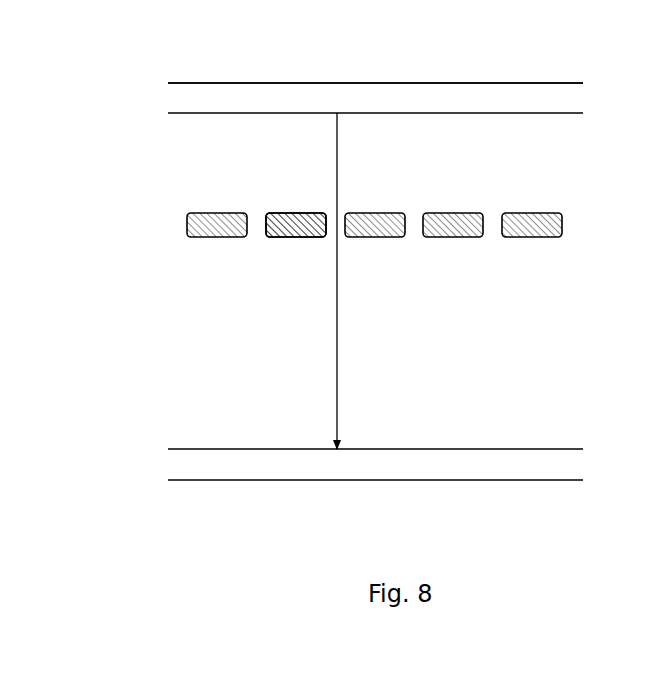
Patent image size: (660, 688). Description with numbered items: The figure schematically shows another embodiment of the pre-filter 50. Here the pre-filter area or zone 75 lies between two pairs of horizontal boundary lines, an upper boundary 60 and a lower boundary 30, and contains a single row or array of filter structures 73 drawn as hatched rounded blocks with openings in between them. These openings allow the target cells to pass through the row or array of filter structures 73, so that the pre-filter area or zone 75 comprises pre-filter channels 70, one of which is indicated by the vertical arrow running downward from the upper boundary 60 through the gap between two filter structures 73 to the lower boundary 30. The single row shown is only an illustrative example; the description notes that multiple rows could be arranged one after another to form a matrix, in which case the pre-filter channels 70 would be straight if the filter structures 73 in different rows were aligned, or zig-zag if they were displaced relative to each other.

The pre-filter 50 is at (133, 80).
The electrode layer 60 is at (361, 82).
The pre-filter area or zone 75 is at (195, 184).
The filter structures 73 is at (294, 211).
The pre-filter channels 70 is at (333, 318).
The second substrate 30 is at (325, 481).